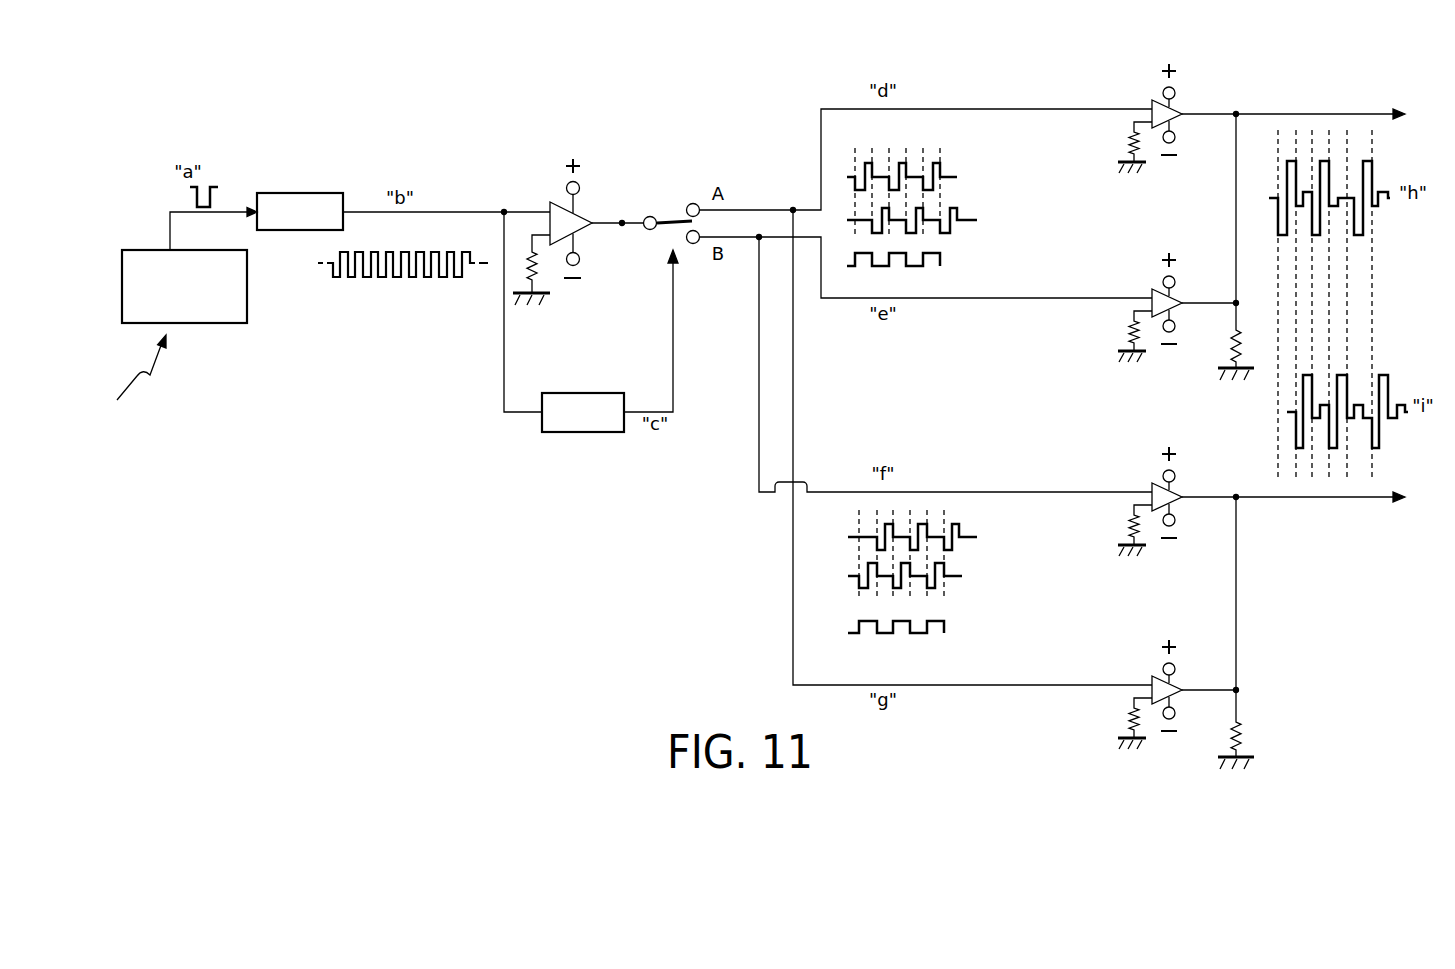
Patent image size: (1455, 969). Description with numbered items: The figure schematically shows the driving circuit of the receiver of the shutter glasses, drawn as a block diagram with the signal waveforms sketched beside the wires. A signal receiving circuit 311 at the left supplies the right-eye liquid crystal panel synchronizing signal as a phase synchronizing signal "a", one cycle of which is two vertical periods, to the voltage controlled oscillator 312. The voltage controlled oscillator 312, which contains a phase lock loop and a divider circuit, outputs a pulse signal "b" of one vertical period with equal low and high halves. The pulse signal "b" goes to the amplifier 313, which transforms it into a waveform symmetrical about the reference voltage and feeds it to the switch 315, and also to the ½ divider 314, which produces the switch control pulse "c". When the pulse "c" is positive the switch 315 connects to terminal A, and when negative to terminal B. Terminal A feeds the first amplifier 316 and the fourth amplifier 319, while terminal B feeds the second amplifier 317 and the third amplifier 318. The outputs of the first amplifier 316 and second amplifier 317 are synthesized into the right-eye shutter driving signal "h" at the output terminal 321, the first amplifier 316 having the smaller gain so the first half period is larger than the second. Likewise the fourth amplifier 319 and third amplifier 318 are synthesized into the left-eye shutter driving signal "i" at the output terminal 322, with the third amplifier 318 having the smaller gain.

The signal receiving circuit 311 is at (198, 325).
The voltage controlled oscillator 312 is at (302, 192).
The amplifier 313 is at (552, 198).
The ½ divider 314 is at (592, 391).
The switch 315 is at (674, 208).
The first amplifier 316 is at (1153, 93).
The second amplifier 317 is at (1153, 283).
The third amplifier 318 is at (1153, 478).
The fourth amplifier 319 is at (1153, 668).
The output terminal 321 is at (1311, 228).
The output terminal 322 is at (1308, 616).